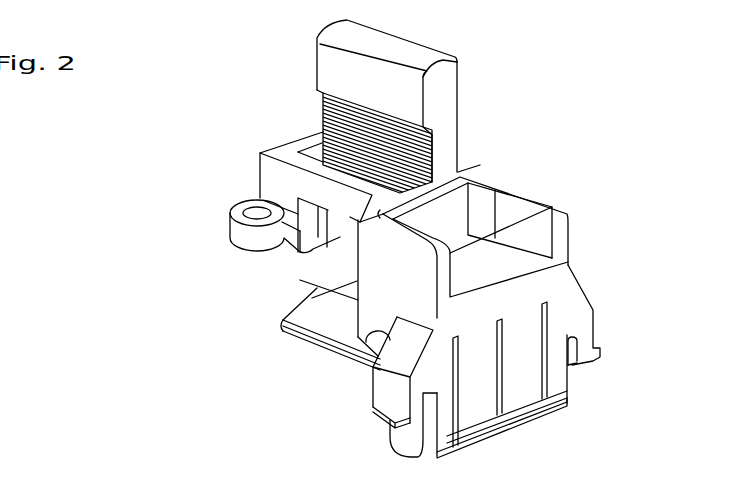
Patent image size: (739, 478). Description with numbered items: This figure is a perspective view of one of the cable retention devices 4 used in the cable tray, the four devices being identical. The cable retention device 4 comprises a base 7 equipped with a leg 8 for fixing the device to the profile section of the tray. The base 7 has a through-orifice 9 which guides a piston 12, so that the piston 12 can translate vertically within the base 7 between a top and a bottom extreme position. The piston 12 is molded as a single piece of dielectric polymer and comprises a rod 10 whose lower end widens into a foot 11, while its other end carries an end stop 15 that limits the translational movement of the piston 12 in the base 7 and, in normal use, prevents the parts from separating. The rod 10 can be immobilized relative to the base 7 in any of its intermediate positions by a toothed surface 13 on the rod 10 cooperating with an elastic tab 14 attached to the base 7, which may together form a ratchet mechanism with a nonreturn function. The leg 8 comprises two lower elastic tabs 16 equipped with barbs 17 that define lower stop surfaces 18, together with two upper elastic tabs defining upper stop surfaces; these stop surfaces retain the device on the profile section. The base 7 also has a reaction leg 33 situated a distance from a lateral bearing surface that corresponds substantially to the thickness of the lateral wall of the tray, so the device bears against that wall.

The cable retention device 4 is at (545, 108).
The base 7 is at (270, 178).
The leg 8 is at (575, 315).
The through-orifice 9 is at (316, 150).
The rod 10 is at (443, 153).
The foot 11 is at (333, 313).
The piston 12 is at (298, 111).
The toothed surface 13 is at (447, 143).
The elastic tab 14 is at (287, 253).
The end stop 15 is at (403, 99).
The lower elastic tabs 16 is at (473, 388).
The barbs 17 is at (457, 451).
The lower stop surfaces 18 is at (565, 396).
The reaction leg 33 is at (372, 338).